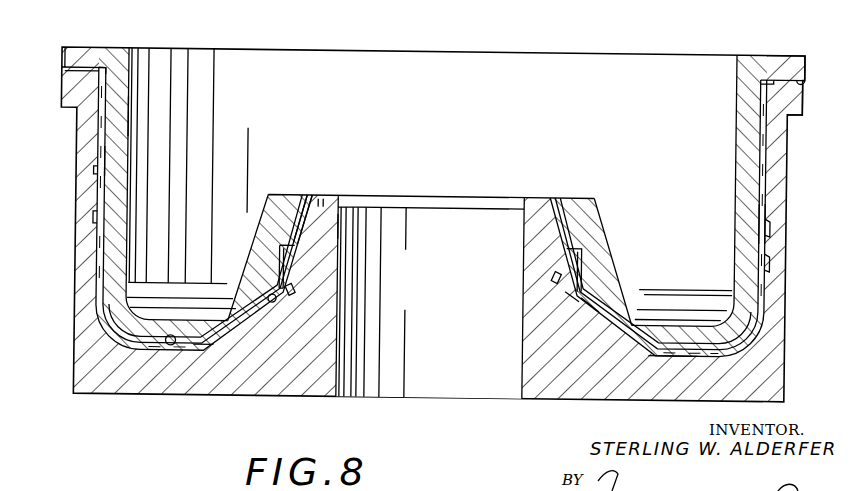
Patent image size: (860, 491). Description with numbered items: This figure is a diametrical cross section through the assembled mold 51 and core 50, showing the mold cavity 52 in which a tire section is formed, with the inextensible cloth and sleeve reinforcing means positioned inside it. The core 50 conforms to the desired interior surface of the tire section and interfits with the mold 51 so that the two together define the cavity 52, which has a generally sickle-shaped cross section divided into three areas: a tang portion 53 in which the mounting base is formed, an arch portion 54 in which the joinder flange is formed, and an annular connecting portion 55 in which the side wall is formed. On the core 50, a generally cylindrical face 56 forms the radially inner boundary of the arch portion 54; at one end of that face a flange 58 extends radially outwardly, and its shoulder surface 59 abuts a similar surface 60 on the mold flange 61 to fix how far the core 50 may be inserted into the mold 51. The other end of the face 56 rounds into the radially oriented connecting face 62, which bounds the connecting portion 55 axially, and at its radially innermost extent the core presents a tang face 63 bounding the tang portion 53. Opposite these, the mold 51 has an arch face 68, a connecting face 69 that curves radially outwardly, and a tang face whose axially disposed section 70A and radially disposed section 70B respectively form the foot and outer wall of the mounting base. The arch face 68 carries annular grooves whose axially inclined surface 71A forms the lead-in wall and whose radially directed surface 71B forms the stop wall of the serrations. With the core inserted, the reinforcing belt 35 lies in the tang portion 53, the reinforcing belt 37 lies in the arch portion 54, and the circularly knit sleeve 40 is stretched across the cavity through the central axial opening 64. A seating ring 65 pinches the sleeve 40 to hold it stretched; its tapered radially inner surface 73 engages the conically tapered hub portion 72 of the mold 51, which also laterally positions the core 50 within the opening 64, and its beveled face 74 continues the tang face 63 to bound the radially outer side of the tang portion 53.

The reinforcing belt 35 is at (280, 300).
The reinforcing belt 37 is at (108, 133).
The sleeve 40 is at (58, 50).
The core 50 is at (266, 50).
The mold 51 is at (143, 407).
The cavity 52 is at (767, 315).
The tang portion 53 is at (584, 306).
The arch portion 54 is at (768, 208).
The annular connecting portion 55 is at (658, 380).
The face 56 is at (95, 212).
The flange 58 is at (788, 62).
The shoulder surface 59 is at (801, 88).
The surface 60 is at (761, 71).
The mold flange 61 is at (791, 103).
The connecting face 62 is at (205, 350).
The tang face 63 is at (276, 294).
The central axial opening 64 is at (413, 196).
The seating ring 65 is at (566, 261).
The arch face 68 is at (104, 77).
The connecting face 69 is at (173, 349).
The axially disposed section 70A is at (556, 288).
The radially disposed section 70B is at (565, 305).
The axially inclined surface 71A is at (104, 167).
The radially directed surface 71B is at (94, 220).
The hub portion 72 is at (330, 228).
The radially inner surface 73 is at (326, 194).
The beveled face 74 is at (298, 295).